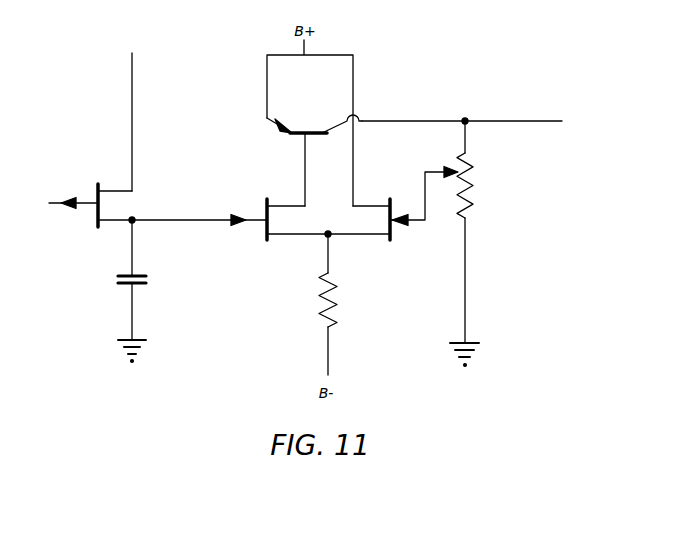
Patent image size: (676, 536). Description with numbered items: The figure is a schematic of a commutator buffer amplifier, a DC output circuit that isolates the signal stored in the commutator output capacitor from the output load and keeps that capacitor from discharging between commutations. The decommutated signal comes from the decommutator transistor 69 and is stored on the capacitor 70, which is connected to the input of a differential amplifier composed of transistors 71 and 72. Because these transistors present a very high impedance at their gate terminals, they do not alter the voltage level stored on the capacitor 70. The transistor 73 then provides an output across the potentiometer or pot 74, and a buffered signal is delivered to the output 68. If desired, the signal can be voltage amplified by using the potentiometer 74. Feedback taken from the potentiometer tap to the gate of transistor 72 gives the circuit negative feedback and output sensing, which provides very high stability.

The output 68 is at (472, 105).
The decommutator transistor 69 is at (96, 186).
The capacitor 70 is at (122, 285).
The transistor 71 is at (262, 236).
The transistor 72 is at (393, 236).
The transistor 73 is at (290, 137).
The potentiometer 74 is at (475, 181).